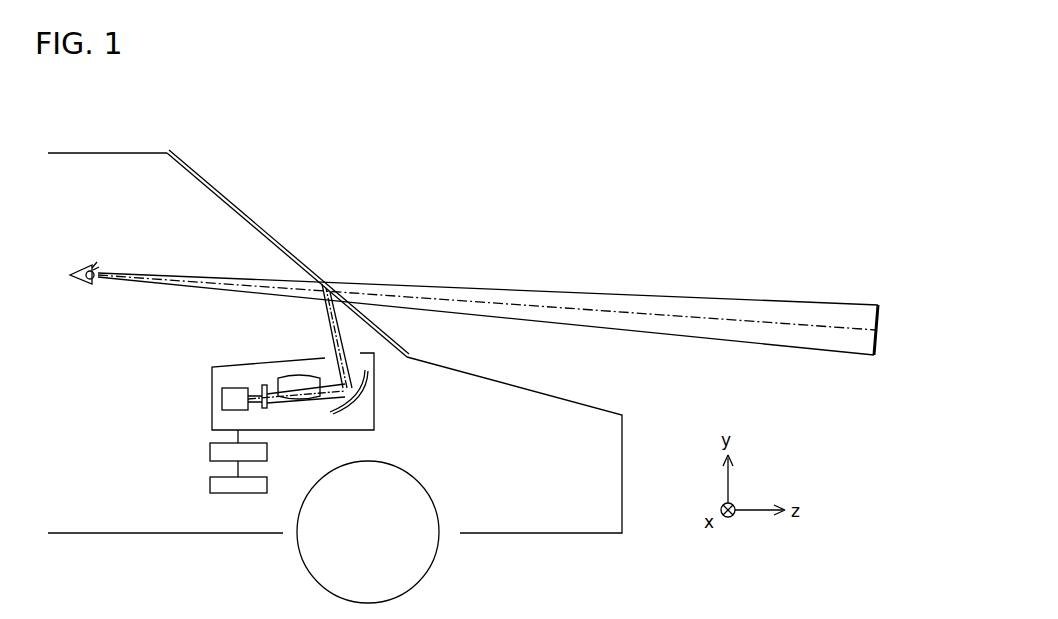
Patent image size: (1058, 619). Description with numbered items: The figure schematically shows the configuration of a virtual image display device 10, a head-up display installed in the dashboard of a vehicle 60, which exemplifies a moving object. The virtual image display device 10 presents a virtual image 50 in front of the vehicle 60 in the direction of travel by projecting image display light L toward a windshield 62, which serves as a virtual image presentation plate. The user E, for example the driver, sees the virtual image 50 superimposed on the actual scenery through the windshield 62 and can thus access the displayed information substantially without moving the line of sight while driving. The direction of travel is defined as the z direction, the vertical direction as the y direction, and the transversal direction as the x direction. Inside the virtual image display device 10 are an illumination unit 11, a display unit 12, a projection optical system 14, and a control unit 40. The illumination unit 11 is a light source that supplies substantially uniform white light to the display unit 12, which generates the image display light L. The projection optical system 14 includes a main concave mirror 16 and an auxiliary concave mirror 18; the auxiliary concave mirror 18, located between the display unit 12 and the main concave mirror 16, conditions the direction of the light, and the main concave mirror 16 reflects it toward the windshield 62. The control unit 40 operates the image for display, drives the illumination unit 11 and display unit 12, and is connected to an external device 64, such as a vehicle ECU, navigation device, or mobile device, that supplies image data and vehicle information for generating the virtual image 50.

The virtual image display device 10 is at (200, 372).
The illumination unit 11 is at (221, 398).
The display unit 12 is at (264, 383).
The projection optical system 14 is at (371, 401).
The main concave mirror 16 is at (356, 389).
The auxiliary concave mirror 18 is at (303, 400).
The control unit 40 is at (210, 452).
The virtual image 50 is at (881, 286).
The vehicle 60 is at (76, 138).
The windshield 62 is at (255, 226).
The external device 64 is at (210, 485).
The user E is at (83, 266).
The image display light L is at (330, 322).